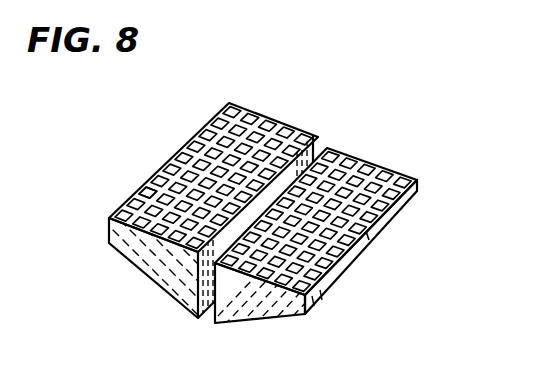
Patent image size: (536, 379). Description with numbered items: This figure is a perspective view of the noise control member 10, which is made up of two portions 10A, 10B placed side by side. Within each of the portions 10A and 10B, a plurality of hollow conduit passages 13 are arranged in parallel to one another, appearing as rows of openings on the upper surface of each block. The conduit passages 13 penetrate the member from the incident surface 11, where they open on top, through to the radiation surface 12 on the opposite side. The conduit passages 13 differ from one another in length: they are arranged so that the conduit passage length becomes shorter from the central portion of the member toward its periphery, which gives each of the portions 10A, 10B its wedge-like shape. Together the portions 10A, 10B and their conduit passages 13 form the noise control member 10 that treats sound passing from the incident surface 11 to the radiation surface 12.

The noise control member 10 is at (331, 134).
The portion of the noise control member 10A is at (380, 173).
The portion of the noise control member 10B is at (272, 126).
The incident surface 11 is at (146, 190).
The radiation surface 12 is at (150, 273).
The hollow conduit passages 13 is at (367, 237).